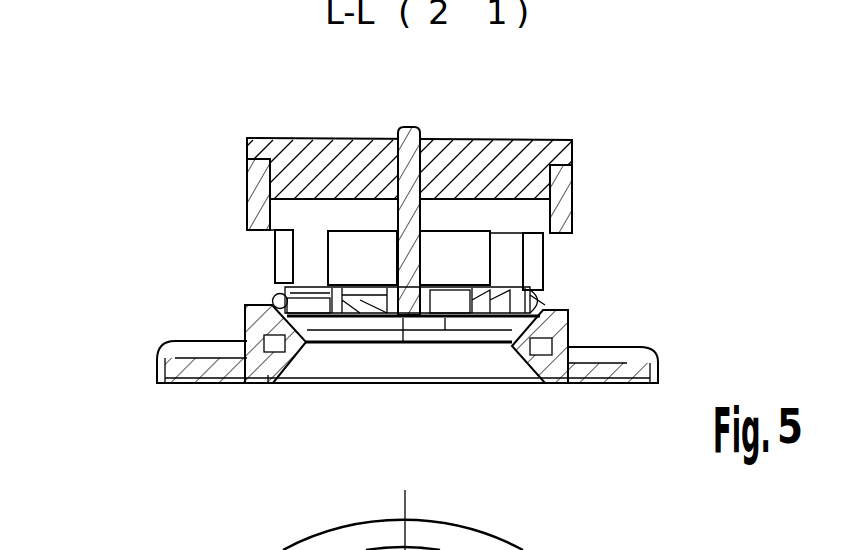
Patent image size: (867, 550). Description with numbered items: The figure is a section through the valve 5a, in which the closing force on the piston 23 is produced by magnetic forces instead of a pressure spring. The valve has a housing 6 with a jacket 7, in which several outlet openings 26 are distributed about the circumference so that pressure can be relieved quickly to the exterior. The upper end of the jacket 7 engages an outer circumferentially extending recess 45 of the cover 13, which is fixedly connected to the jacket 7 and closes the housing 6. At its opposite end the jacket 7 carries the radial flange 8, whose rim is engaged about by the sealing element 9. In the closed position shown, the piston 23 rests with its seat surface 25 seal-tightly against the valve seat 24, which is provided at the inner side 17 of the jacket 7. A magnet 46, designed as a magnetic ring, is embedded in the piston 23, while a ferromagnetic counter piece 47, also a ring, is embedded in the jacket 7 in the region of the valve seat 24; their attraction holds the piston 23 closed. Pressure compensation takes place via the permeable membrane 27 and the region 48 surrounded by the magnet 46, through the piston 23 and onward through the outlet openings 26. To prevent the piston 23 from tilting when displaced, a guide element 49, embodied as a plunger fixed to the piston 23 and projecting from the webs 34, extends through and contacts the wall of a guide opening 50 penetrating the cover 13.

The cover 13 is at (313, 165).
The guide opening 50 is at (404, 127).
The valve 5a is at (588, 88).
The guide element 49 is at (421, 170).
The outer circumferentially extending recess 45 is at (258, 182).
The jacket 7 is at (255, 211).
The outlet opening 26 is at (367, 253).
The seat surface 25 is at (274, 296).
The sealing element 9 is at (175, 393).
The radial flange 8 is at (212, 380).
The magnet 46 is at (310, 310).
The counter piece 47 is at (264, 380).
The permeable membrane 27 is at (358, 320).
The web 34 is at (403, 290).
The region 48 is at (452, 300).
The inner side 17 is at (478, 300).
The housing 6 is at (573, 201).
The piston 23 is at (542, 300).
The valve seat 24 is at (560, 330).